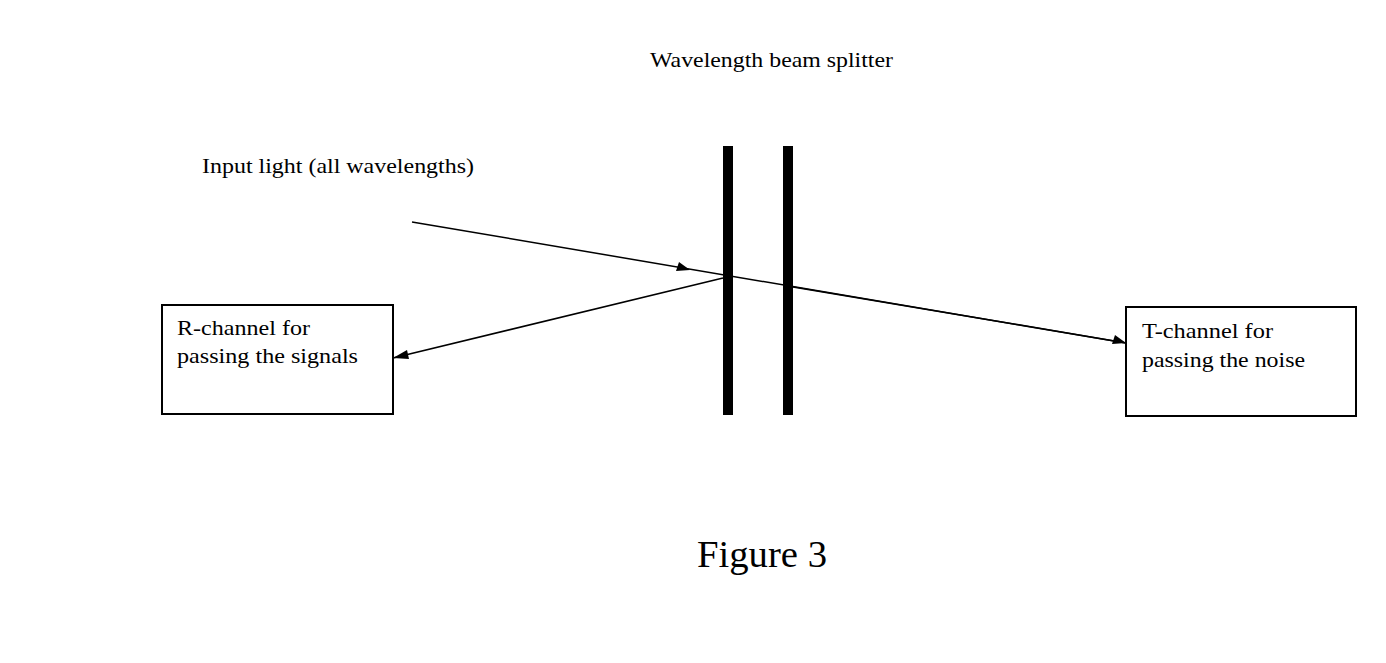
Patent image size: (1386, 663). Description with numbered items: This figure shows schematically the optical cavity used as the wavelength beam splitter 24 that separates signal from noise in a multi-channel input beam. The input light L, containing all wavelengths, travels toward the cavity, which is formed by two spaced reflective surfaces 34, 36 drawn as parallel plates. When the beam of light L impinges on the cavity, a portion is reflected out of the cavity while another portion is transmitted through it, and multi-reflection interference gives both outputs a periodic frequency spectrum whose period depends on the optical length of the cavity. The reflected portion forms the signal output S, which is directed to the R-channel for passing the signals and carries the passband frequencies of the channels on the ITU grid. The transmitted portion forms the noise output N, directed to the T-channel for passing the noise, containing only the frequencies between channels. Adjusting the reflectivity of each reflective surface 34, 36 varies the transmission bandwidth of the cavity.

The wavelength beam splitter 24 is at (817, 268).
The reflective surface 34 is at (723, 208).
The reflective surface 36 is at (783, 201).
The input light signal L is at (567, 248).
The signal output S is at (537, 325).
The noise output N is at (920, 310).